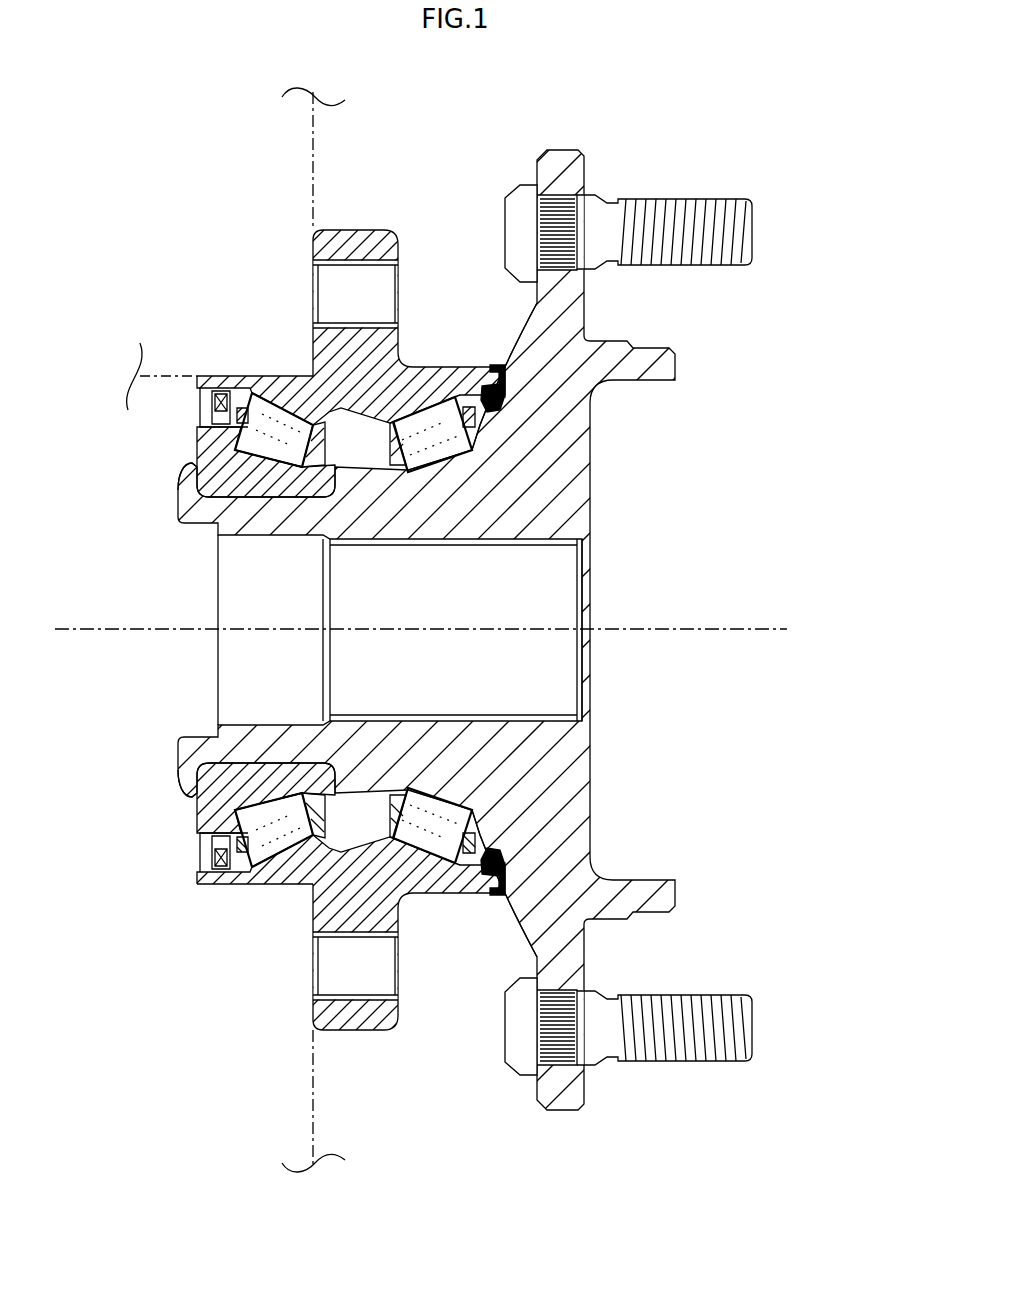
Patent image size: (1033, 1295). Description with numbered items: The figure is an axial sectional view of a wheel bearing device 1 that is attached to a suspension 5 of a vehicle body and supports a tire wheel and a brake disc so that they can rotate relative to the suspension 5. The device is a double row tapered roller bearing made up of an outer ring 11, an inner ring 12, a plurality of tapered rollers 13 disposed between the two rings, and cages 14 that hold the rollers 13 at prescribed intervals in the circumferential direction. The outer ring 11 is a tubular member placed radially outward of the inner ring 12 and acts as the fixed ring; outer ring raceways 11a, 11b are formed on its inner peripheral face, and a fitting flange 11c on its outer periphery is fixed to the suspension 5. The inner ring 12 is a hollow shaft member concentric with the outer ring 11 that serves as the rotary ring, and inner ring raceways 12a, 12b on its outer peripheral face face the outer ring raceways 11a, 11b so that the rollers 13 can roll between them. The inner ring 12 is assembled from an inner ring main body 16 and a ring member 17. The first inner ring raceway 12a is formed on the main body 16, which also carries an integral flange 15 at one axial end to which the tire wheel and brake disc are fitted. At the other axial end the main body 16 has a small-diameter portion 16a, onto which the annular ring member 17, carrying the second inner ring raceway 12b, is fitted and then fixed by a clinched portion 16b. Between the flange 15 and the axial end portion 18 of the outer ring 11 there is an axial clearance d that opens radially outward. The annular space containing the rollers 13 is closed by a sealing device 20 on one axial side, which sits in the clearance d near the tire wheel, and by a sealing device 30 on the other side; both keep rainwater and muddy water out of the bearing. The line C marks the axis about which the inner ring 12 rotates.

The wheel bearing device 1 is at (447, 624).
The suspension 5 is at (317, 140).
The outer ring 11 is at (351, 595).
The outer ring raceway 11a is at (425, 860).
The outer ring raceway 11b is at (318, 840).
The fitting flange 11c is at (354, 237).
The inner ring 12 is at (419, 635).
The first inner ring raceway 12a is at (440, 845).
The second inner ring raceway 12b is at (255, 845).
The rollers 13 is at (265, 843).
The cages 14 is at (383, 820).
The flange 15 is at (573, 1095).
The inner ring main body 16 is at (419, 635).
The small-diameter portion 16a is at (275, 520).
The clinched portion 16b is at (192, 493).
The ring member 17 is at (282, 630).
The axial end portion 18 is at (515, 878).
The sealing device 20 is at (502, 352).
The sealing device 30 is at (190, 410).
The axis C is at (745, 630).
The axial clearance d is at (518, 906).